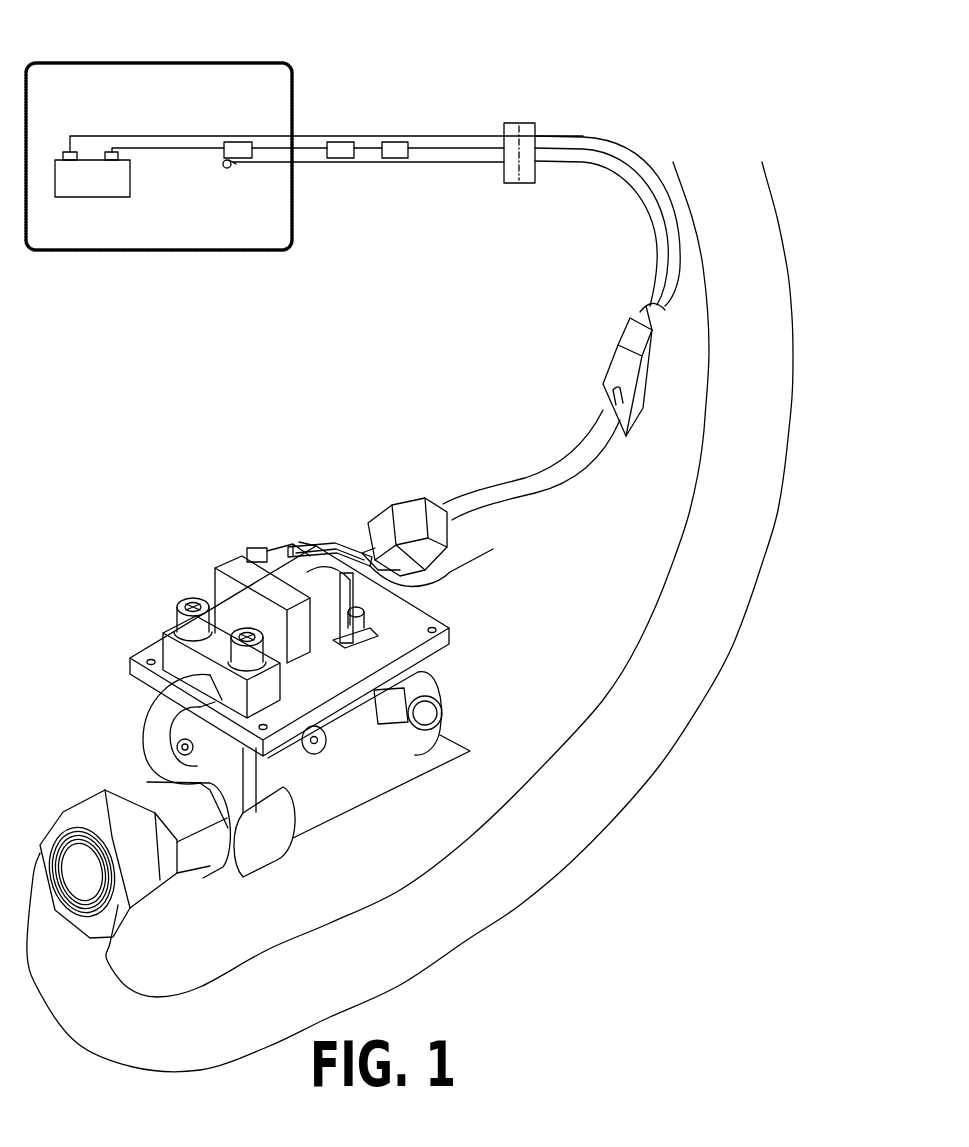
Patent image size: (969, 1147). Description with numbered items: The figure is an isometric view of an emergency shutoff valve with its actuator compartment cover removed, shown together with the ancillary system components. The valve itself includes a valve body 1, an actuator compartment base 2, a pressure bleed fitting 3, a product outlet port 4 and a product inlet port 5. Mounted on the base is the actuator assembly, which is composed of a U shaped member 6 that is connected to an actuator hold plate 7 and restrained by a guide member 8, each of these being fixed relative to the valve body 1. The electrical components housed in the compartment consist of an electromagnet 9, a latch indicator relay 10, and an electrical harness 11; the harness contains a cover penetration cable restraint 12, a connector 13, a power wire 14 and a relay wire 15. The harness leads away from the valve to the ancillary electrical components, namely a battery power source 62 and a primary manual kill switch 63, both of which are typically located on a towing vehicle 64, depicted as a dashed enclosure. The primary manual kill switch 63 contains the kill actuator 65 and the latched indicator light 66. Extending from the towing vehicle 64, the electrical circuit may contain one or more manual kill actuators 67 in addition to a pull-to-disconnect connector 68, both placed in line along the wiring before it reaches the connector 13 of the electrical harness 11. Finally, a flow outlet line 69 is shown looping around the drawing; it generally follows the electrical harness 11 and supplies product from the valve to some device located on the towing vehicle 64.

The valve body 1 is at (373, 752).
The actuator compartment base 2 is at (447, 650).
The pressure bleed fitting 3 is at (436, 711).
The product outlet port 4 is at (97, 905).
The product inlet port 5 is at (457, 681).
The U shaped member 6 is at (150, 745).
The actuator hold plate 7 is at (222, 562).
The guide member 8 is at (170, 655).
The electromagnet 9 is at (336, 610).
The latch indicator relay 10 is at (258, 547).
The electrical harness 11 is at (530, 465).
The cover penetration cable restraint 12 is at (410, 500).
The connector 13 is at (616, 367).
The power wire 14 is at (444, 559).
The relay wire 15 is at (318, 545).
The battery power source 62 is at (92, 183).
The primary manual kill switch 63 is at (225, 176).
The towing vehicle 64 is at (170, 242).
The kill actuator 65 is at (238, 150).
The latched indicator light 66 is at (232, 167).
The manual kill actuators 67 is at (394, 157).
The pull-to-disconnect connector 68 is at (527, 176).
The flow outlet line 69 is at (278, 958).